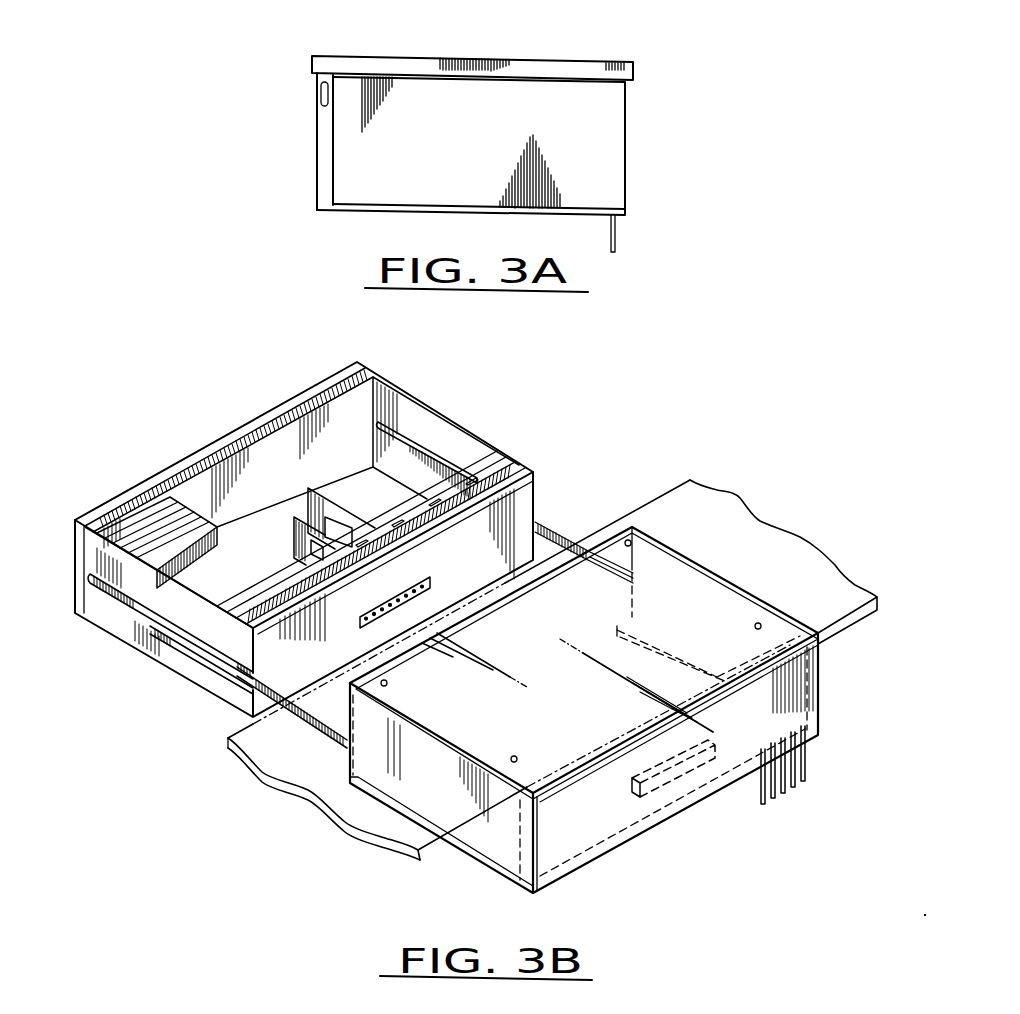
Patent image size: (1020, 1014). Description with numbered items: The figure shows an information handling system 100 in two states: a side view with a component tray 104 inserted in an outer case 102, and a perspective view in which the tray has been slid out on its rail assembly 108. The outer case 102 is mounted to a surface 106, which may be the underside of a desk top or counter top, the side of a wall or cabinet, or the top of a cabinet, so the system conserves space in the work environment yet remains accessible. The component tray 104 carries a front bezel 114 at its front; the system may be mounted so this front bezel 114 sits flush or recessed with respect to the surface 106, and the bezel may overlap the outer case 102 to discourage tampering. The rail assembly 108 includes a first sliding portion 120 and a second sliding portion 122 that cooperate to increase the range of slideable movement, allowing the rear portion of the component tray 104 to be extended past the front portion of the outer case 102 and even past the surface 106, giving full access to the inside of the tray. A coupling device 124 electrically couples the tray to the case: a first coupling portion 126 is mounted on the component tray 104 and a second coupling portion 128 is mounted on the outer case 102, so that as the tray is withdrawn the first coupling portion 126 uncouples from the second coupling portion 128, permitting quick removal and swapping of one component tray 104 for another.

In FIG. 3A, the information handling system 100 is at (645, 146).
In FIG. 3B, the information handling system 100 is at (304, 826).
In FIG. 3A, the outer case 102 is at (405, 187).
In FIG. 3B, the outer case 102 is at (483, 837).
In FIG. 3B, the component tray 104 is at (324, 555).
In FIG. 3A, the surface 106 is at (597, 62).
In FIG. 3B, the surface 106 is at (657, 517).
In FIG. 3B, the rail assembly 108 is at (185, 597).
In FIG. 3A, the front bezel 114 is at (317, 142).
In FIG. 3B, the front bezel 114 is at (130, 489).
In FIG. 3B, the first sliding portion 120 is at (137, 606).
In FIG. 3B, the second sliding portion 122 is at (203, 658).
In FIG. 3B, the coupling device 124 is at (532, 709).
In FIG. 3B, the first coupling portion 126 is at (447, 572).
In FIG. 3B, the second coupling portion 128 is at (710, 775).